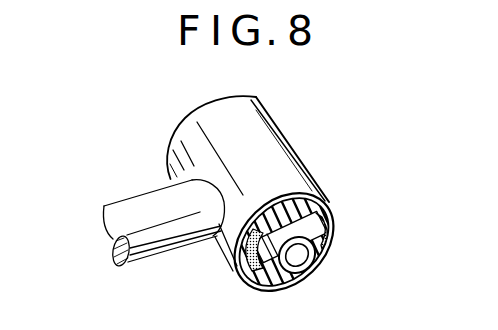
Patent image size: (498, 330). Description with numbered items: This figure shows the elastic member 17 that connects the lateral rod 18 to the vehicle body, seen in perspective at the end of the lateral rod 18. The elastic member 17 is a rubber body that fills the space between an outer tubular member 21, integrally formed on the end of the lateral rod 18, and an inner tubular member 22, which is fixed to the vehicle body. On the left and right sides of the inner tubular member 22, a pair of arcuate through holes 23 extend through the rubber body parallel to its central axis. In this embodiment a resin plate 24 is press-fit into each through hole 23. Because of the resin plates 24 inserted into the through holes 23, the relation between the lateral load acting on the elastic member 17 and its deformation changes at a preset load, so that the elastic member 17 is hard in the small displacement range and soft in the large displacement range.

The elastic member 17 is at (249, 287).
The lateral rod 18 is at (130, 212).
The outer tubular member 21 is at (291, 166).
The inner tubular member 22 is at (311, 274).
The arcuate through hole 23 is at (333, 213).
The resin plate 24 is at (327, 204).